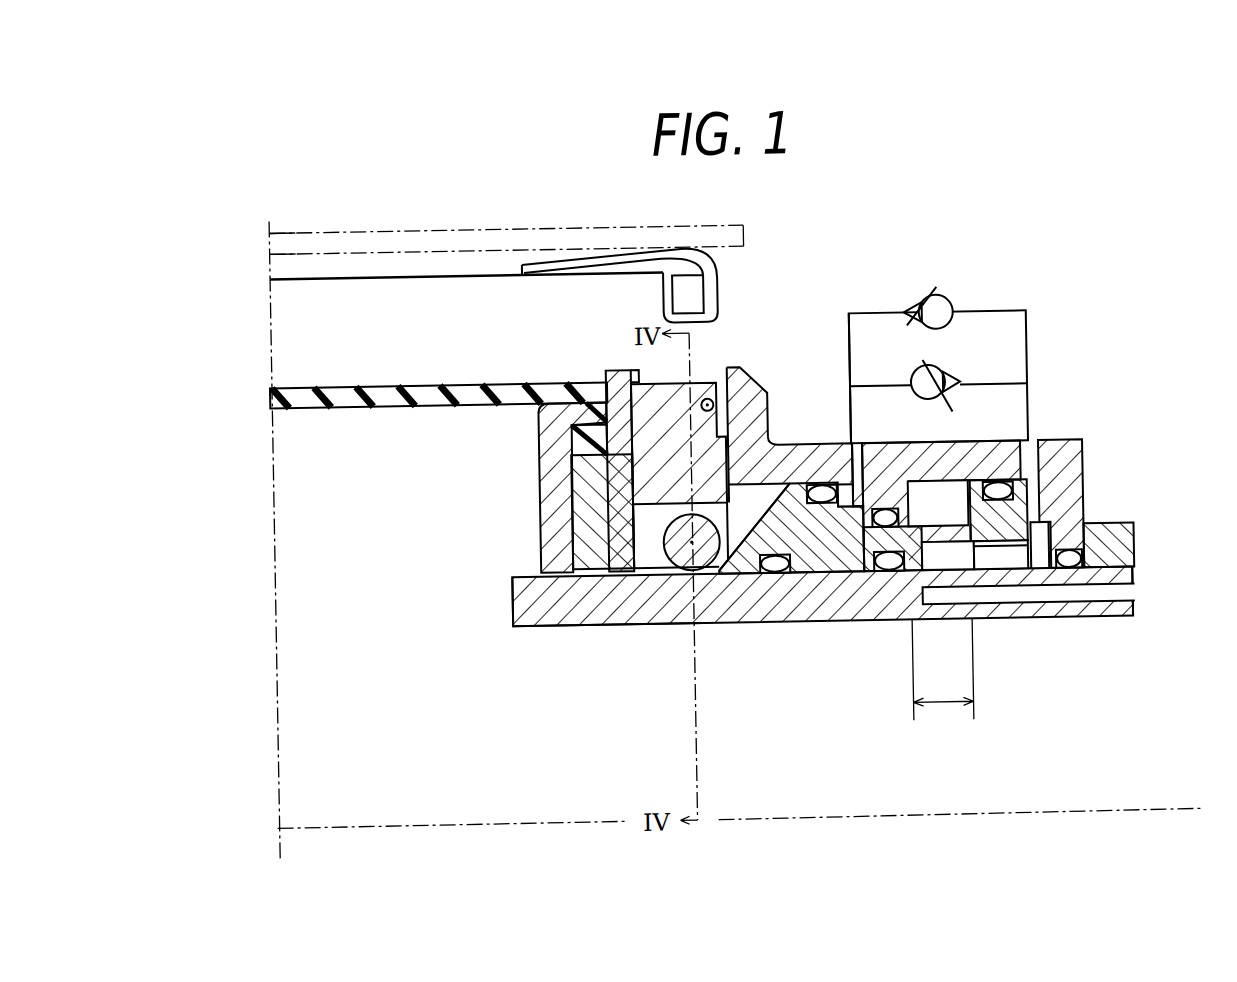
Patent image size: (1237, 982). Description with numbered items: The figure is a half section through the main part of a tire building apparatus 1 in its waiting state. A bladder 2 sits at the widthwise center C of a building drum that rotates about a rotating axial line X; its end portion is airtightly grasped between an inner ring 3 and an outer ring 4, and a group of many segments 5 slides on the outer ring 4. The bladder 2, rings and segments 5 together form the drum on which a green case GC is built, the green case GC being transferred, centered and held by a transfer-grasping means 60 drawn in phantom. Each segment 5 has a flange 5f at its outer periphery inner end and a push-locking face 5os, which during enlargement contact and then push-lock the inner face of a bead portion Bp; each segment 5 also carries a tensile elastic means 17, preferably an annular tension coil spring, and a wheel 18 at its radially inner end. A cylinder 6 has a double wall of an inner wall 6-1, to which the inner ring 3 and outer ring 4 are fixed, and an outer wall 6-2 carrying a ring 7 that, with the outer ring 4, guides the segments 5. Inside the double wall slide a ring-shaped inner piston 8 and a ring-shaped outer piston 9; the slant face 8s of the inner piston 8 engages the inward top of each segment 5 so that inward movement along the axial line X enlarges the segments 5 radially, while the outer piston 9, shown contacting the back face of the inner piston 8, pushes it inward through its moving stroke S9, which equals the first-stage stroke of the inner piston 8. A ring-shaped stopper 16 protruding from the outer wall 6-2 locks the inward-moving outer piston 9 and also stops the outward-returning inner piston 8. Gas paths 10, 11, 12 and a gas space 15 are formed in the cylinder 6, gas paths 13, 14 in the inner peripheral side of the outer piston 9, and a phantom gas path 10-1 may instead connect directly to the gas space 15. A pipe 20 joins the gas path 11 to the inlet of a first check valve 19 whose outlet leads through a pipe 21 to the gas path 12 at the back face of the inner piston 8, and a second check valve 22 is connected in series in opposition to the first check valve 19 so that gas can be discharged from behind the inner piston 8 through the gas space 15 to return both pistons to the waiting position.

The tire building apparatus 1 is at (831, 297).
The bladder 2 is at (380, 384).
The inner ring 3 is at (554, 469).
The outer ring 4 is at (583, 497).
The segment 5 is at (630, 507).
The flange 5f is at (631, 371).
The push-locking face 5os is at (702, 390).
The cylinder 6 is at (807, 640).
The inner wall 6-1 is at (725, 603).
The outer wall 6-2 is at (964, 465).
The ring 7 is at (750, 408).
The inner piston 8 is at (835, 547).
The slant face 8s is at (749, 510).
The outer piston 9 is at (1037, 503).
The gas path 10 is at (1046, 599).
The gas path 10-1 is at (1134, 586).
The gas path 11 is at (1041, 447).
The gas path 12 is at (854, 460).
The gas path 13 is at (952, 564).
The gas path 14 is at (1012, 560).
The gas space 15 is at (1109, 535).
The stopper 16 is at (901, 505).
The tensile elastic means 17 is at (604, 425).
The wheel 18 is at (631, 567).
The first check valve 19 is at (964, 378).
The pipe 20 is at (1033, 396).
The pipe 21 is at (852, 408).
The second check valve 22 is at (971, 306).
The transfer-grasping means 60 is at (427, 233).
The bead portion Bp is at (724, 282).
The green case GC is at (458, 286).
The widthwise center C is at (272, 282).
The rotating axial line X is at (971, 818).
The moving stroke of outer piston S9 is at (943, 682).